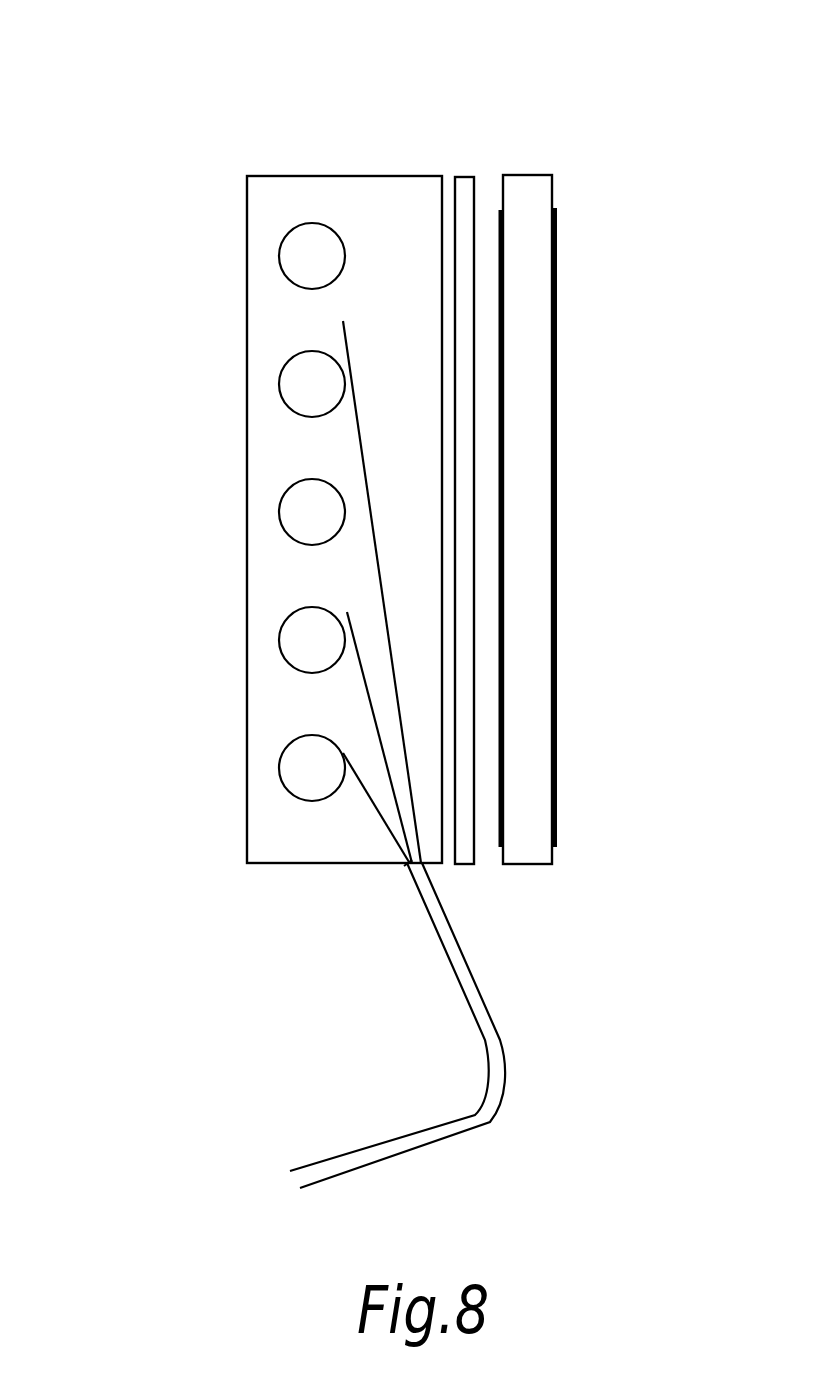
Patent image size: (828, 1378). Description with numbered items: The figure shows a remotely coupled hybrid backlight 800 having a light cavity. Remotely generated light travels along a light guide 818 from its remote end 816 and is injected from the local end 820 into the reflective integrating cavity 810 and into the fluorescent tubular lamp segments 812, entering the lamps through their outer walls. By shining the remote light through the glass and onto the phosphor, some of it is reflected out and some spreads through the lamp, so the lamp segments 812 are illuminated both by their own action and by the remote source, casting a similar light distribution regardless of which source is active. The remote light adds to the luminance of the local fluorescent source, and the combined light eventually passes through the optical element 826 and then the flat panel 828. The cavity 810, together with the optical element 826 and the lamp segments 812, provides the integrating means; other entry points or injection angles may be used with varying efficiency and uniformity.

The lighting assembly 800 is at (173, 66).
The cavity 810 is at (347, 577).
The fluorescent tubular lamp segments 812 is at (293, 243).
The remote end 816 is at (297, 1178).
The light guide 818 is at (493, 1118).
The local end 820 is at (416, 860).
The optical element 826 is at (463, 180).
The flat panel 828 is at (525, 243).